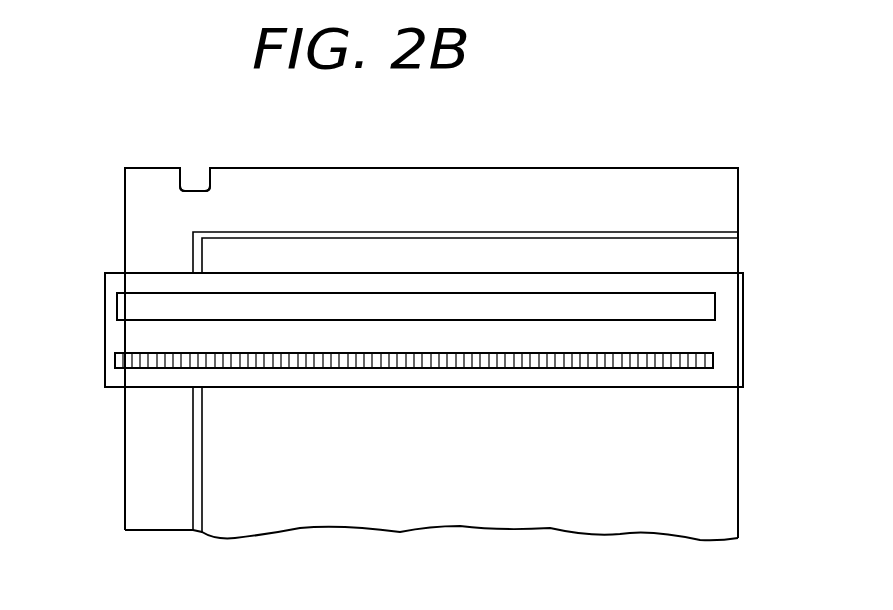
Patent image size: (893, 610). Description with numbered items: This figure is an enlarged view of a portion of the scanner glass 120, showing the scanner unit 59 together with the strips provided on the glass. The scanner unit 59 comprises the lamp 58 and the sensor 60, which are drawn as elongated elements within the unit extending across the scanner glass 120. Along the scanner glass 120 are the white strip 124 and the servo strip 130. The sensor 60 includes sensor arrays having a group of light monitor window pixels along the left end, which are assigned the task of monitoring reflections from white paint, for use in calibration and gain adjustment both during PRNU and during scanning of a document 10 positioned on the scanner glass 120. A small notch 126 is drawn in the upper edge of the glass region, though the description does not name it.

The document 10 is at (496, 478).
The lamp 58 is at (712, 300).
The scanner unit 59 is at (104, 332).
The sensor 60 is at (713, 360).
The scanner glass 120 is at (718, 483).
The white strip 124 is at (571, 177).
The notch 126 is at (193, 182).
The servo strip 130 is at (134, 498).